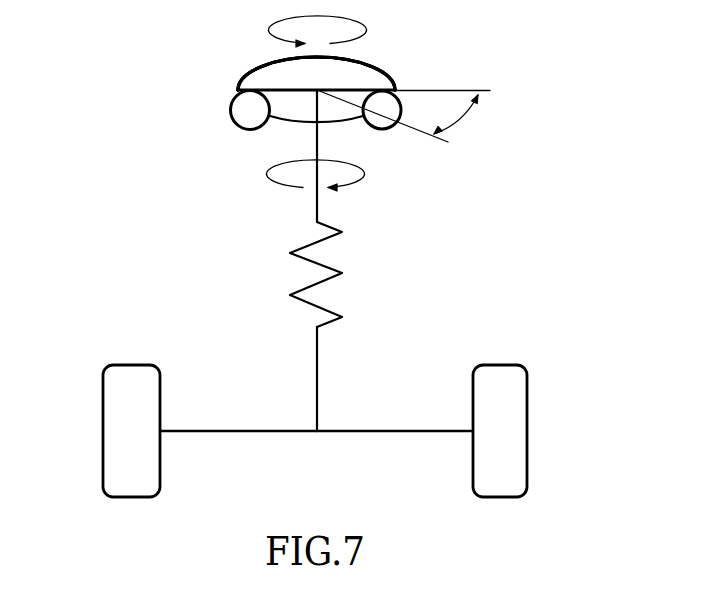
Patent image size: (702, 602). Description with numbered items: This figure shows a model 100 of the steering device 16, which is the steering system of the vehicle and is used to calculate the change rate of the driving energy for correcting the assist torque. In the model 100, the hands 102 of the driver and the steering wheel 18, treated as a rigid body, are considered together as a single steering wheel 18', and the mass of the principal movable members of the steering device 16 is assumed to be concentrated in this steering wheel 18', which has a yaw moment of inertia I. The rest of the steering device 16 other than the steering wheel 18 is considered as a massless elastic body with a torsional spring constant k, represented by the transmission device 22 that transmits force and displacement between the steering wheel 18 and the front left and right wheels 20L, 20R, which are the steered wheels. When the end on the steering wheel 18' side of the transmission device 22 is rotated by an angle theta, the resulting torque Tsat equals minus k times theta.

The model 100 is at (160, 58).
The steering wheel 18 is at (288, 89).
The steering wheel 18' is at (345, 64).
The hands 102 is at (232, 118).
The steering device 16 is at (487, 198).
The transmission device 22 is at (397, 265).
The front left wheel 20L is at (103, 400).
The front right wheel 20R is at (527, 396).